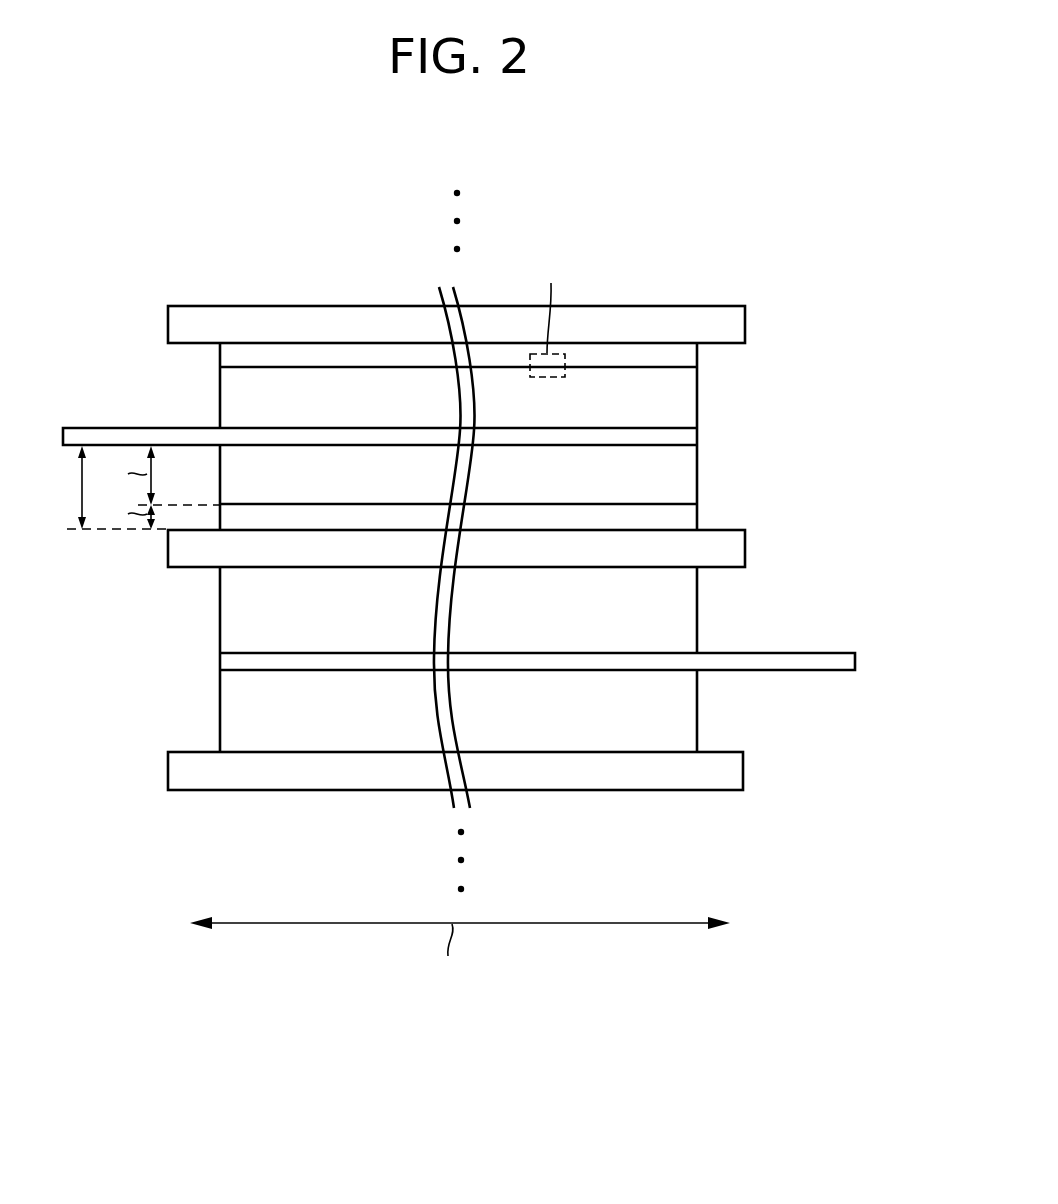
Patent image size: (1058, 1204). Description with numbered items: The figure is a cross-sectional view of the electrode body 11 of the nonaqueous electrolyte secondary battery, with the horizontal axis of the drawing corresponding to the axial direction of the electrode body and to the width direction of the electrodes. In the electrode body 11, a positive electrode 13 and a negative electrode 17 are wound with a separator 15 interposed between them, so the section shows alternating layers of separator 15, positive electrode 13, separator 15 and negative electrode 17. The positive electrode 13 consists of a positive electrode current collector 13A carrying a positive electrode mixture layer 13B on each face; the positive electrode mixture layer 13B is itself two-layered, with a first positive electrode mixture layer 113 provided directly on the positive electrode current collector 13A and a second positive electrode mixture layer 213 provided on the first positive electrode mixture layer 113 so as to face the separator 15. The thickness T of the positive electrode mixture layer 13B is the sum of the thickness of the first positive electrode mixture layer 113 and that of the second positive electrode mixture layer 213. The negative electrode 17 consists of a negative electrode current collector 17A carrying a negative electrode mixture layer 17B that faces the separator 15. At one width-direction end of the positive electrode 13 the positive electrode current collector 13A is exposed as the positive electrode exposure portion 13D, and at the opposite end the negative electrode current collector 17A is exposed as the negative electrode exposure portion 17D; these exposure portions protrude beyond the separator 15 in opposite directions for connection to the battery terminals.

The electrode body 11 is at (606, 253).
The positive electrode 13 is at (846, 360).
The positive electrode current collector 13A is at (688, 434).
The positive electrode mixture layer 13B is at (779, 345).
The positive electrode exposure portion 13D is at (213, 422).
The first positive electrode mixture layer 113 is at (688, 392).
The second positive electrode mixture layer 213 is at (688, 352).
The separator 15 is at (735, 321).
The negative electrode 17 is at (140, 600).
The negative electrode current collector 17A is at (230, 662).
The negative electrode mixture layer 17B is at (230, 610).
The negative electrode exposure portion 17D is at (855, 647).